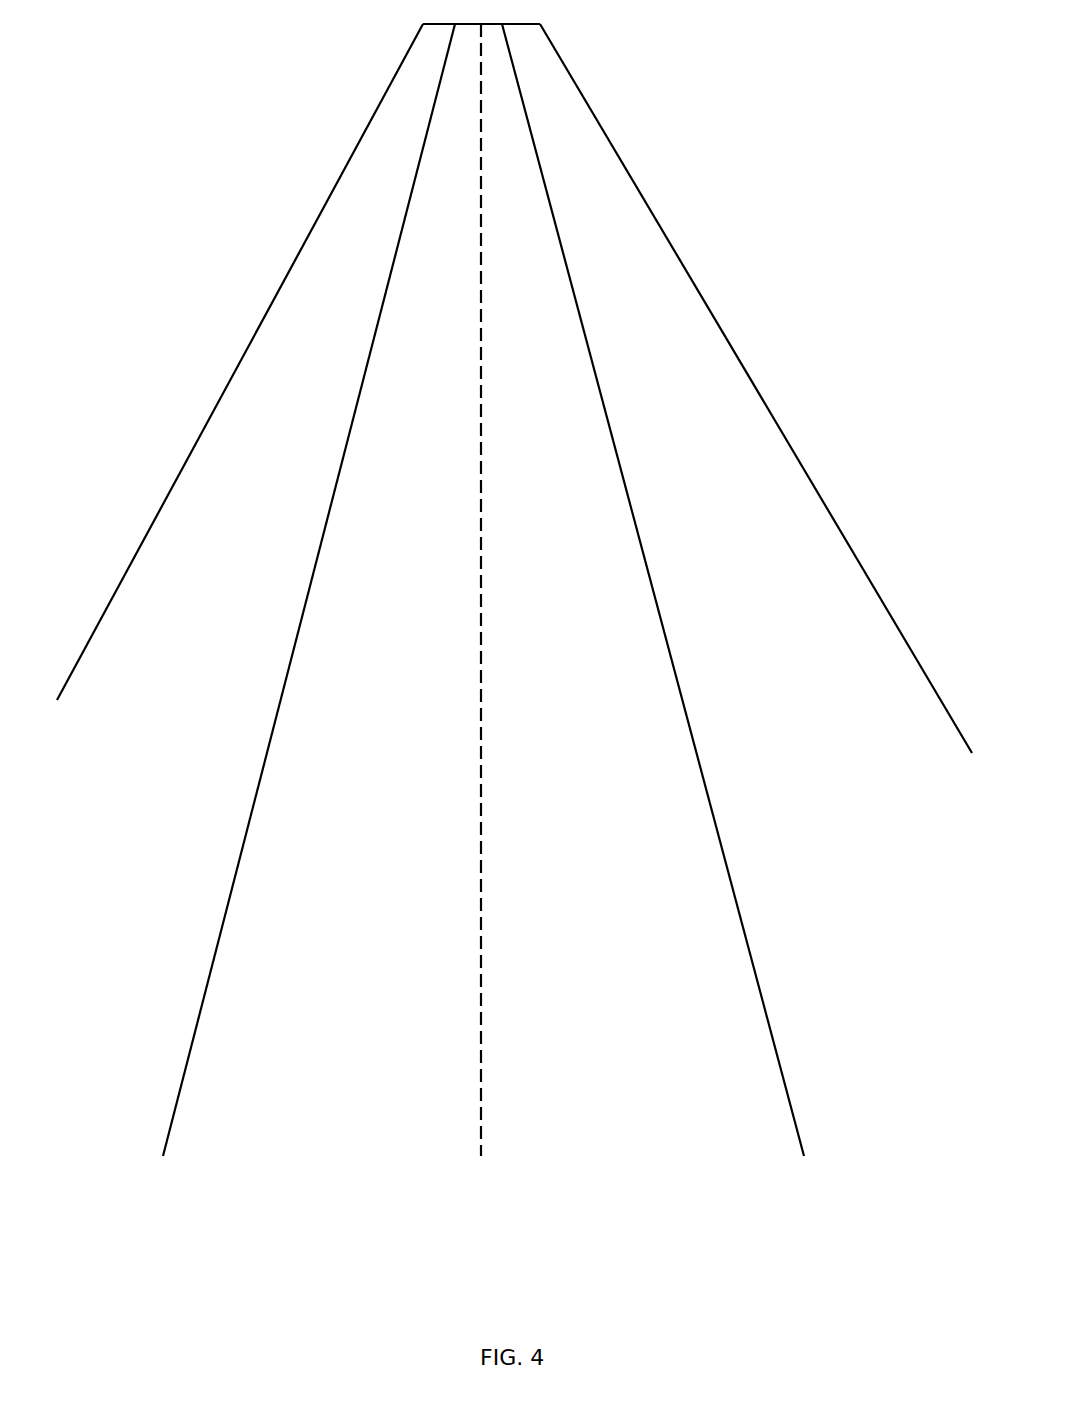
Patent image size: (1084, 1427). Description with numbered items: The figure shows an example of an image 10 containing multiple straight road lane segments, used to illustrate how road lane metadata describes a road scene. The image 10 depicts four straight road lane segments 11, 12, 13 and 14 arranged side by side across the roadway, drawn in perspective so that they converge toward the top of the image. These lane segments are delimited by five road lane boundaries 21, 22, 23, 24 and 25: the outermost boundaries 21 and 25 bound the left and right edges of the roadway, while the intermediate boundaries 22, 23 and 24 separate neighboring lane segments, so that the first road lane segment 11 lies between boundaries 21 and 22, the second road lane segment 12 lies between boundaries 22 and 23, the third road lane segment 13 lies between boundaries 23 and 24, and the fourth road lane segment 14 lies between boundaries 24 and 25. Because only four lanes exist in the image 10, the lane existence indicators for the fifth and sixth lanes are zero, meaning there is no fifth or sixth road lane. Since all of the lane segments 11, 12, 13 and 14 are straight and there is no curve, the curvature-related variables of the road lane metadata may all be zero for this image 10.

The image 10 is at (577, 1210).
The road lane segment 11 is at (187, 928).
The road lane segment 12 is at (355, 970).
The road lane segment 13 is at (610, 959).
The road lane segment 14 is at (812, 971).
The road lane boundary 21 is at (68, 682).
The road lane boundary 22 is at (202, 1022).
The road lane boundary 23 is at (483, 1055).
The road lane boundary 24 is at (766, 1022).
The road lane boundary 25 is at (932, 690).